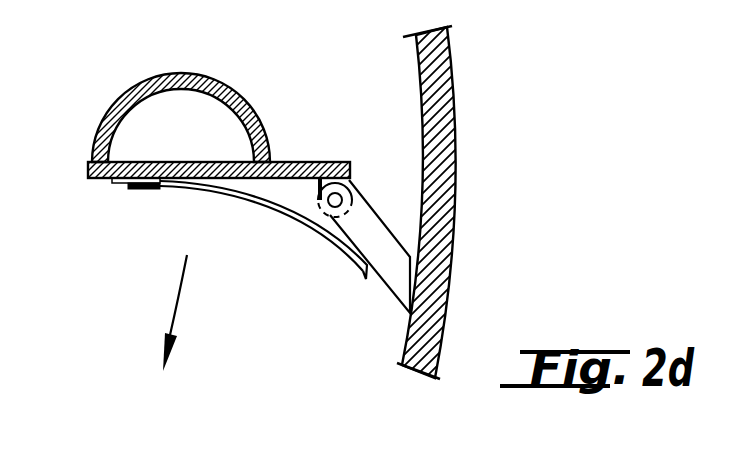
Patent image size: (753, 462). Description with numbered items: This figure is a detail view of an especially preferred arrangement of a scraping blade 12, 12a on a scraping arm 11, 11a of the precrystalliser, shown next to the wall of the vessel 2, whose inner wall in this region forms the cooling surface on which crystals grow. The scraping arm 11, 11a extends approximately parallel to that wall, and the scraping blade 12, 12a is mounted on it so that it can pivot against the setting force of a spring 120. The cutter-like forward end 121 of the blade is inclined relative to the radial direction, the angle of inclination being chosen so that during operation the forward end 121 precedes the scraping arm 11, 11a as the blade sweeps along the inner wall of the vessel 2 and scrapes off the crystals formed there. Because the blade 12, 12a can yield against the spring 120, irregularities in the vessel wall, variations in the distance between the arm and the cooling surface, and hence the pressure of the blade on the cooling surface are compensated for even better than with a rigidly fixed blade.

The vessel 2 is at (438, 69).
The scraping arm 11 is at (172, 96).
The scraping arm 11a is at (127, 103).
The scraping blade 12 is at (250, 210).
The scraping blade 12a is at (249, 252).
The spring 120 is at (262, 200).
The cutter-like forward end 121 is at (400, 292).